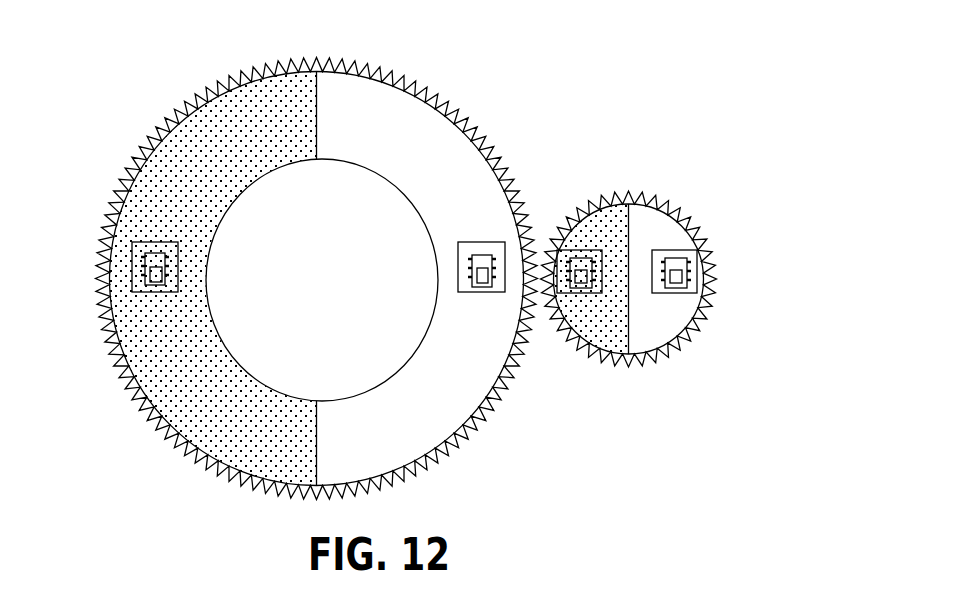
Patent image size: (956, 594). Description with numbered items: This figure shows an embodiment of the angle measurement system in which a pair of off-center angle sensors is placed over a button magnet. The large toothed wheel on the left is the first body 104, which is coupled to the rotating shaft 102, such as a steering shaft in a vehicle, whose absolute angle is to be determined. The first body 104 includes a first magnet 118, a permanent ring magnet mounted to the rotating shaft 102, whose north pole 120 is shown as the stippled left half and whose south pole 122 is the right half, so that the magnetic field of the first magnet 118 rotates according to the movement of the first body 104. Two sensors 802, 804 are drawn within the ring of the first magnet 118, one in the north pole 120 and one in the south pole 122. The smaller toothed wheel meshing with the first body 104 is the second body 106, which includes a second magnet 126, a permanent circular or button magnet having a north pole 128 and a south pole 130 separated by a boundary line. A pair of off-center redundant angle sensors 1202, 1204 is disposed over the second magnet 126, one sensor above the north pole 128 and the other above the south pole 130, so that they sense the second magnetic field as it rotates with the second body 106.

The rotating shaft 102 is at (335, 286).
The first body 104 is at (138, 118).
The second body 106 is at (682, 190).
The first magnet 118 is at (316, 85).
The north pole 120 is at (195, 365).
The south pole 122 is at (482, 368).
The second magnet 126 is at (628, 225).
The north pole 128 is at (613, 246).
The south pole 130 is at (670, 246).
The first magnetic sensor 802 is at (152, 289).
The second magnetic sensor 804 is at (480, 293).
The off-center redundant angle sensor 1202 is at (582, 286).
The off-center redundant angle sensor 1204 is at (687, 285).